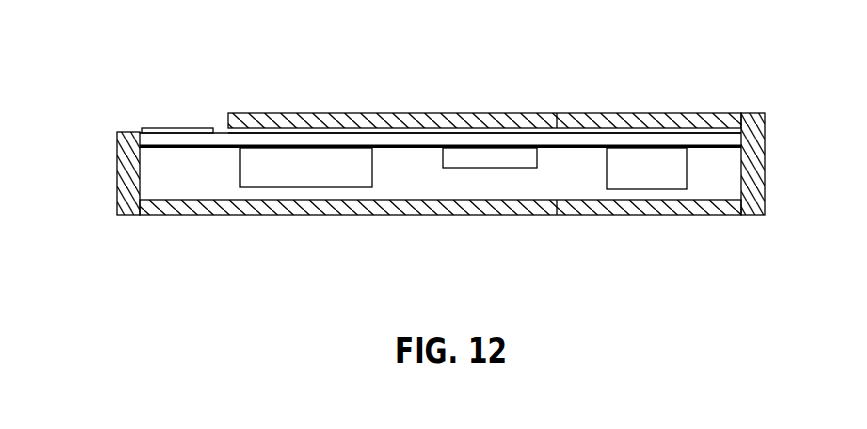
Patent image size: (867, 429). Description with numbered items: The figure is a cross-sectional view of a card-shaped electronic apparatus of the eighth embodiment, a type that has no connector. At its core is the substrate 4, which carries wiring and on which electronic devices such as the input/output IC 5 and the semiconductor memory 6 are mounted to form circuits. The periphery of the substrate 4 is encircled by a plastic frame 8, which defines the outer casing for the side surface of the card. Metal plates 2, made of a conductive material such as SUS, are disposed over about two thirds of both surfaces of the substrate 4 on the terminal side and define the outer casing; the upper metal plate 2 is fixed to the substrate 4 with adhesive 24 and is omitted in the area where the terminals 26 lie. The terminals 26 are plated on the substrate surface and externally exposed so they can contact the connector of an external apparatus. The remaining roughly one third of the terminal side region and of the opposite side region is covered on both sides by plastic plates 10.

The metal plate 2 is at (458, 113).
The substrate 4 is at (187, 148).
The input/output IC 5 is at (287, 188).
The semiconductor memory 6 is at (500, 158).
The plastic frame 8 is at (117, 172).
The plastic plate 10 is at (645, 113).
The adhesive 24 is at (381, 130).
The terminal 26 is at (175, 128).